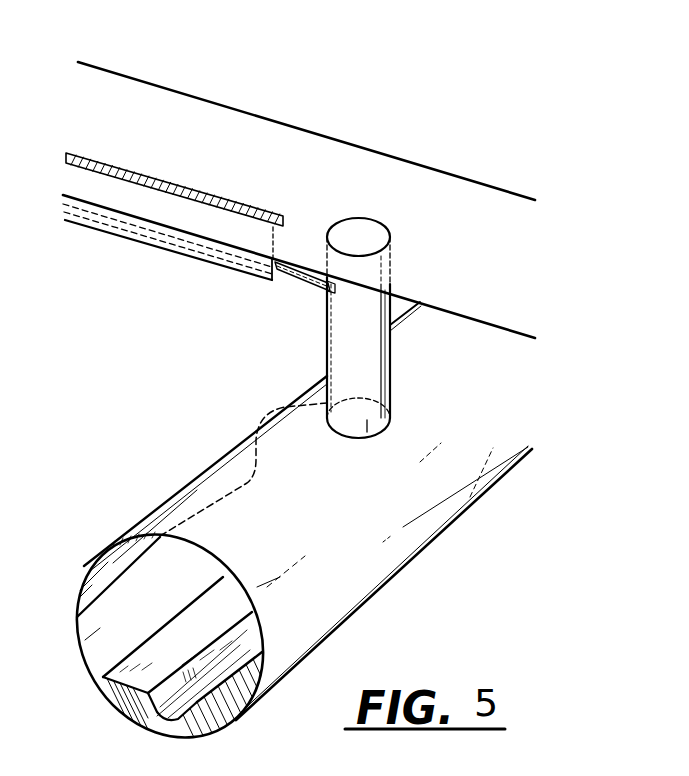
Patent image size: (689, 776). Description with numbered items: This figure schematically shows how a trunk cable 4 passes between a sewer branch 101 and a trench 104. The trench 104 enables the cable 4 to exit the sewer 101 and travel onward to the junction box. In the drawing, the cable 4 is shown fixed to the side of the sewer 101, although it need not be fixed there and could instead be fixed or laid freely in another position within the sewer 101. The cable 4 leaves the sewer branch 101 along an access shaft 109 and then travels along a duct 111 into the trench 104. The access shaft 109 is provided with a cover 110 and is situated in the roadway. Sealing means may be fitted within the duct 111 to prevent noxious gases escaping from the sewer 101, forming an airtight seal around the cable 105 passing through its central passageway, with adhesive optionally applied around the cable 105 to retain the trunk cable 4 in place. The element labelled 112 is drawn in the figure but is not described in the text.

The trunk cable 4 is at (113, 592).
The sewer branch 101 is at (286, 537).
The trench 104 is at (187, 193).
The cable 105 is at (164, 240).
The access shaft 109 is at (336, 265).
The cover 110 is at (358, 228).
The duct 111 is at (298, 288).
The slab 112 is at (482, 207).